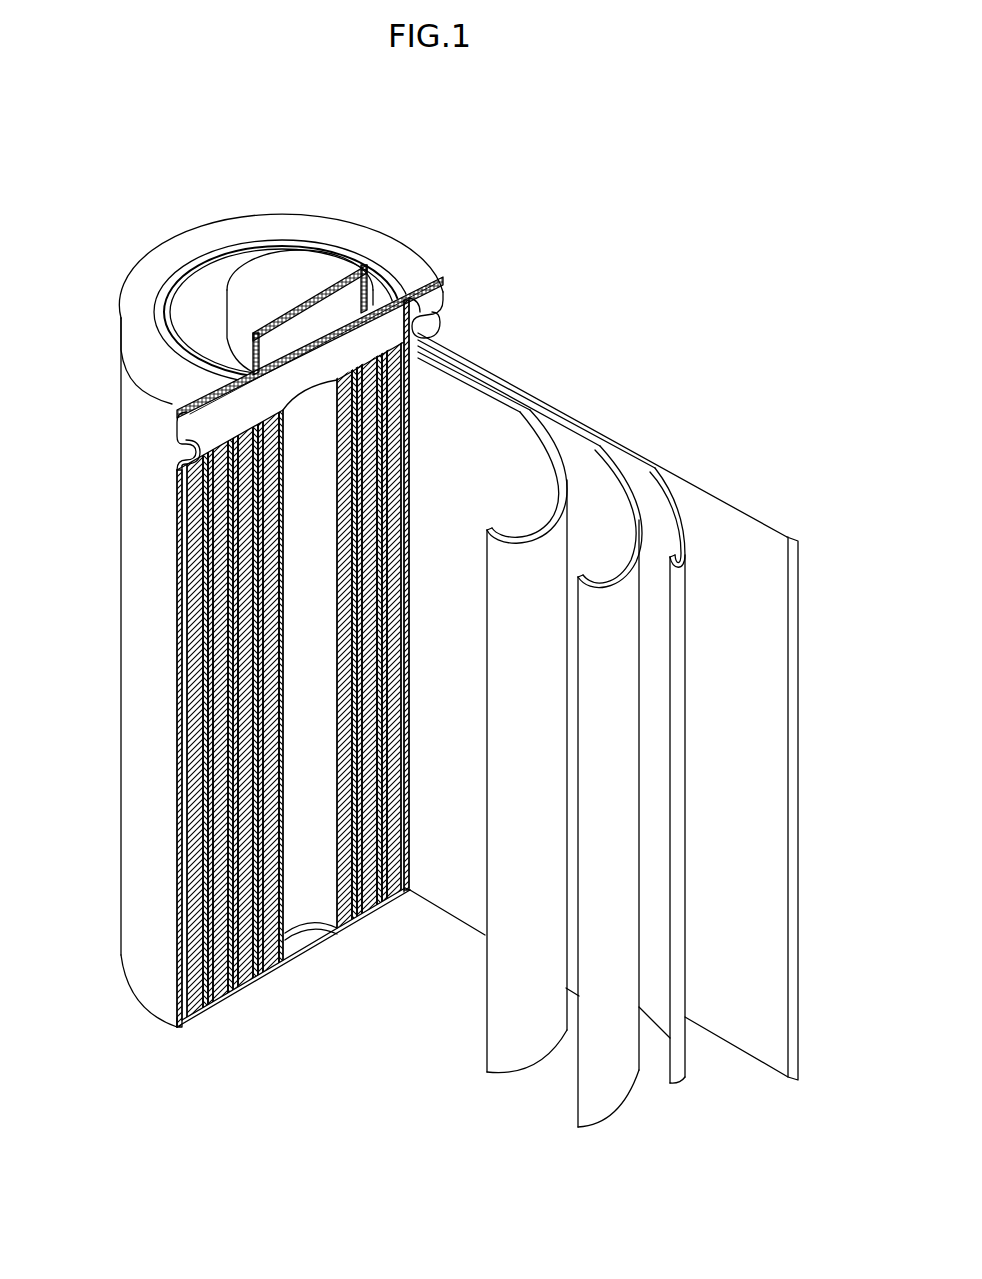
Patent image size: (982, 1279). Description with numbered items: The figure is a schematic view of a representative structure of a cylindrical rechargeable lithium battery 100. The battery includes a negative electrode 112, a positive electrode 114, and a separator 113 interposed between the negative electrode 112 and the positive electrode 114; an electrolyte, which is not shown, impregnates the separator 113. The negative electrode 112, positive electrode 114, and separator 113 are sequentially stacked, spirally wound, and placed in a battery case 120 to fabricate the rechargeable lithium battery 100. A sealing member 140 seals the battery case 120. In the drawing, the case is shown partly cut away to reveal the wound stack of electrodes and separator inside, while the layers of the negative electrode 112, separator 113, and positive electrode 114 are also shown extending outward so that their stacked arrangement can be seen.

The rechargeable lithium battery 100 is at (507, 200).
The negative electrode 112 is at (725, 528).
The separator 113 is at (470, 420).
The positive electrode 114 is at (585, 500).
The battery case 120 is at (133, 628).
The sealing member 140 is at (245, 283).